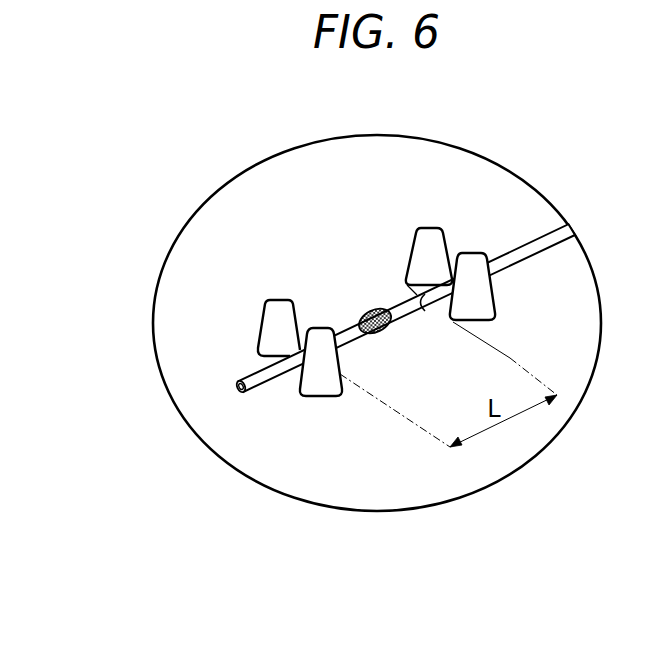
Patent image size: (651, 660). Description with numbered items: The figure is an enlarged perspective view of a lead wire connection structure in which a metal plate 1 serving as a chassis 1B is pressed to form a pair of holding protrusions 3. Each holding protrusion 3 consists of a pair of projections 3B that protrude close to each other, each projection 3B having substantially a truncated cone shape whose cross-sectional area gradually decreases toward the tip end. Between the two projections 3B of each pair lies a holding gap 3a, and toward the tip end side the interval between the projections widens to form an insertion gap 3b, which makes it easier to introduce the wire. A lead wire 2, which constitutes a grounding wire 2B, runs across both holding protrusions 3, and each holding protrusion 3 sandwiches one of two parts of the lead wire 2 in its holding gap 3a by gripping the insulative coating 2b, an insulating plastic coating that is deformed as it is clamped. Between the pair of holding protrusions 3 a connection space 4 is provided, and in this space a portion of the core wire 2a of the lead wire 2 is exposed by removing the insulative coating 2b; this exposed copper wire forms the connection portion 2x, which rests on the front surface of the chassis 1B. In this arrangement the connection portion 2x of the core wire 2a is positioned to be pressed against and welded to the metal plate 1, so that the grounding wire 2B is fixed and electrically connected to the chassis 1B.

The metal plate 1 is at (317, 323).
The chassis 1B is at (210, 292).
The lead wire 2 is at (406, 415).
The grounding wire 2B is at (406, 415).
The core wire 2a is at (353, 337).
The insulative coating 2b is at (238, 368).
The connection portion 2x is at (385, 335).
The holding protrusion 3 is at (372, 262).
The projection 3B is at (278, 315).
The holding gap 3a is at (292, 380).
The insertion gap 3b is at (282, 342).
The connection space 4 is at (362, 275).